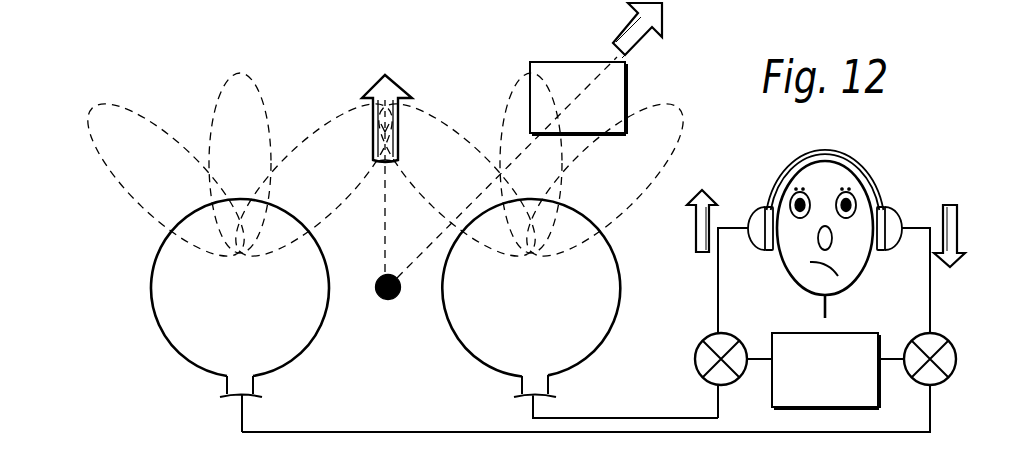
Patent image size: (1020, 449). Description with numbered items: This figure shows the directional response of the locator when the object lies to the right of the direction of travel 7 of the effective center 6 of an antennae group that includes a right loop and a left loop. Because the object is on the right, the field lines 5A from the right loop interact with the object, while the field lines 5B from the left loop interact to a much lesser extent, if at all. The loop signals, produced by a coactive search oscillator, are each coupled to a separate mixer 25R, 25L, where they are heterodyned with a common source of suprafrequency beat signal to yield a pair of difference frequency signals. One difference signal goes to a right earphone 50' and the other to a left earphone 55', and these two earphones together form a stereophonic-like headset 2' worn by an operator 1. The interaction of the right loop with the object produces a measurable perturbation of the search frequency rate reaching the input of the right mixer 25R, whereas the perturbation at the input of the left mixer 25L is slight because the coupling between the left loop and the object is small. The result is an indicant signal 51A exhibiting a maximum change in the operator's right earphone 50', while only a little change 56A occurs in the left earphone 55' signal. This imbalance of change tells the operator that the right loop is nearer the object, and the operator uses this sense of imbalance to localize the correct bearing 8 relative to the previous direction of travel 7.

The operator 1 is at (810, 289).
The stereophonic-like headset 2' is at (825, 167).
The field lines from the right loop 5A is at (580, 148).
The field lines from the left loop 5B is at (150, 118).
The effective center 6 is at (381, 299).
The direction of travel 7 is at (363, 91).
The correct bearing 8 is at (647, 41).
The right mixer 25R is at (705, 347).
The left mixer 25L is at (917, 378).
The right earphone 50' is at (755, 247).
The indicant signal 51A is at (697, 239).
The left earphone 55' is at (886, 248).
The little change 56A is at (941, 221).